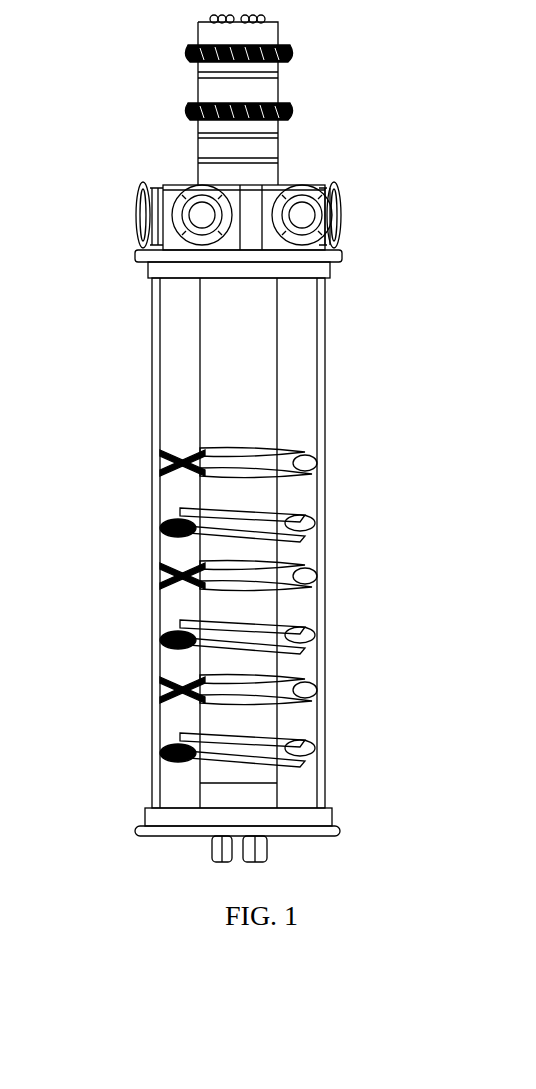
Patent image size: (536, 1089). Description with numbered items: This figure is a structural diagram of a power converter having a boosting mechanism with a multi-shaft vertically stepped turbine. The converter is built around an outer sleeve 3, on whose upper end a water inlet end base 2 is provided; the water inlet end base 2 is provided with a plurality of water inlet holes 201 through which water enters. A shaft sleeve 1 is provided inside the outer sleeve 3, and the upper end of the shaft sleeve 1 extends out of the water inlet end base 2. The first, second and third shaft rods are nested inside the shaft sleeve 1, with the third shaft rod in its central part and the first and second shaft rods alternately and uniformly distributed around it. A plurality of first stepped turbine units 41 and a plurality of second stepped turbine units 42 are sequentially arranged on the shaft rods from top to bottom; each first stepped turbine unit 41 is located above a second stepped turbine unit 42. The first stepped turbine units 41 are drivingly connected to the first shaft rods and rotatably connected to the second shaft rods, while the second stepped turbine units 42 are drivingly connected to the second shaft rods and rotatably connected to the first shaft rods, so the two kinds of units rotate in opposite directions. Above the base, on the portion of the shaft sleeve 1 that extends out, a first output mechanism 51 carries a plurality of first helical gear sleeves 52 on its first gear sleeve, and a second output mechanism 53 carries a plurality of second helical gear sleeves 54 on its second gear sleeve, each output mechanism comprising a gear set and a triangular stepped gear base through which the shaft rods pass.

The shaft sleeve 1 is at (210, 387).
The water inlet end base 2 is at (175, 186).
The water inlet holes 201 is at (318, 228).
The outer sleeve 3 is at (325, 420).
The first stepped turbine units 41 is at (305, 466).
The second stepped turbine units 42 is at (308, 524).
The first output mechanism 51 is at (308, 57).
The first helical gear sleeves 52 is at (183, 58).
The second output mechanism 53 is at (318, 110).
The second helical gear sleeves 54 is at (183, 115).